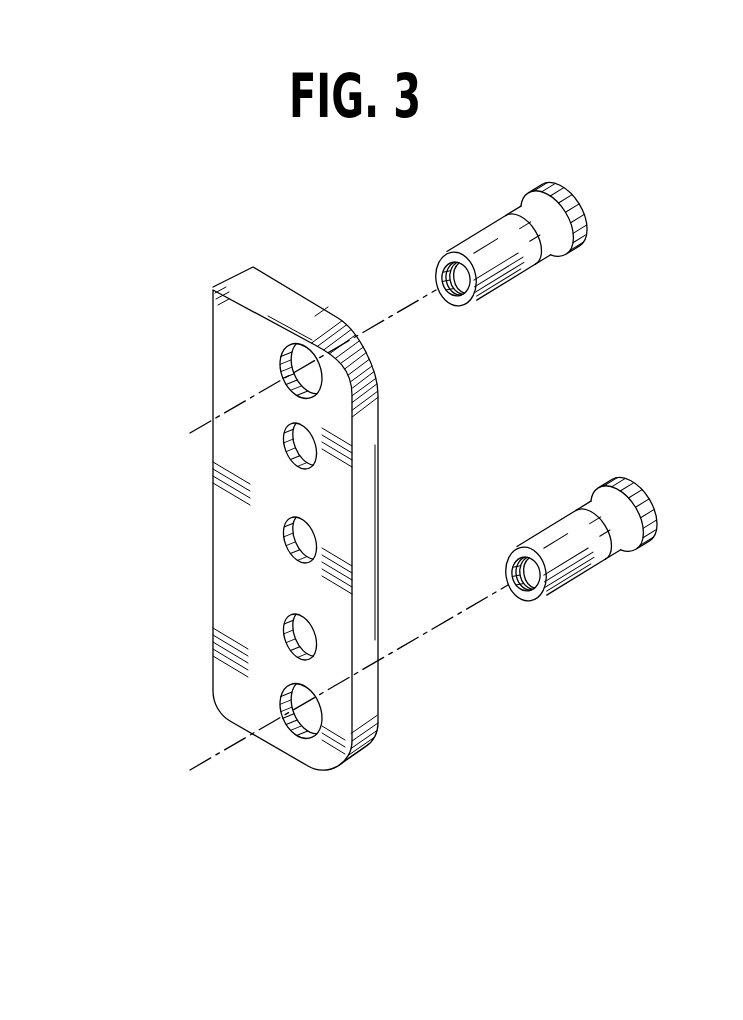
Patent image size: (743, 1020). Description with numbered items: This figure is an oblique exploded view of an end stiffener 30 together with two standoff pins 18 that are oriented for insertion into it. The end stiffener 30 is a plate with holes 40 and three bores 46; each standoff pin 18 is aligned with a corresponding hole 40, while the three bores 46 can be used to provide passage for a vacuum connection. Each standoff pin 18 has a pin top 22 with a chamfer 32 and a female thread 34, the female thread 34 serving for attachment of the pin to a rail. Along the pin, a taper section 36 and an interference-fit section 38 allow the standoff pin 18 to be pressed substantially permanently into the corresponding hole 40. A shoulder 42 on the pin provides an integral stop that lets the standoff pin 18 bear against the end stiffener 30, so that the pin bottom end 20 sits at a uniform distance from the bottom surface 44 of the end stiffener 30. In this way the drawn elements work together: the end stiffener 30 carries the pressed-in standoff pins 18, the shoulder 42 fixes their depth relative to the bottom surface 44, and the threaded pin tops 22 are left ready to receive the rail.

The standoff pin 18 is at (524, 298).
The pin bottom end 20 is at (518, 388).
The pin top 22 is at (440, 260).
The end stiffener 30 is at (250, 520).
The chamfer 32 is at (438, 273).
The female thread 34 is at (432, 282).
The taper section 36 is at (540, 265).
The interference-fit section 38 is at (562, 257).
The hole 40 is at (281, 366).
The shoulder 42 is at (528, 203).
The bottom surface 44 is at (383, 418).
The bore 46 is at (284, 458).